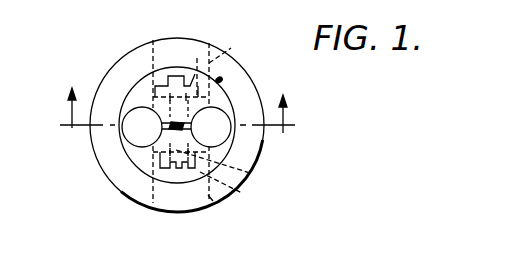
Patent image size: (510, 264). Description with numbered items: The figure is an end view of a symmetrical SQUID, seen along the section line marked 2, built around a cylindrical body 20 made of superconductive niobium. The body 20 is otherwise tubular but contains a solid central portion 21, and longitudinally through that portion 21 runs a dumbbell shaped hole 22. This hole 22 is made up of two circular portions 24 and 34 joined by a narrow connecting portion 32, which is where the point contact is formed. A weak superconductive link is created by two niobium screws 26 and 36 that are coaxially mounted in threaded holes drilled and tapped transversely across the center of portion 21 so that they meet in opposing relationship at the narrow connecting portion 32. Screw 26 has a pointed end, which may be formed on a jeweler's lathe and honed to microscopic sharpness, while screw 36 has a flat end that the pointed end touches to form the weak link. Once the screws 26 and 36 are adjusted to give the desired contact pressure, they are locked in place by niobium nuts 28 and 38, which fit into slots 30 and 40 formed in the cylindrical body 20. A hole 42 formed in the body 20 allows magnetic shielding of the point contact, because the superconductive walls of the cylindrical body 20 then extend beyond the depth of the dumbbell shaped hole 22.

The section line 2- 2 is at (177, 122).
The cylindrical body 20 is at (98, 98).
The solid central portion 21 is at (191, 124).
The dumbbell shaped hole 22 is at (129, 111).
The circular portion 24 is at (140, 110).
The niobium screw 26 is at (170, 76).
The niobium nut 28 is at (197, 58).
The slot 30 is at (231, 48).
The narrow connecting portion 32 is at (199, 111).
The circular portion 34 is at (258, 88).
The niobium screw 36 is at (250, 173).
The niobium nut 38 is at (242, 193).
The slot 40 is at (219, 202).
The hole 42 is at (143, 155).